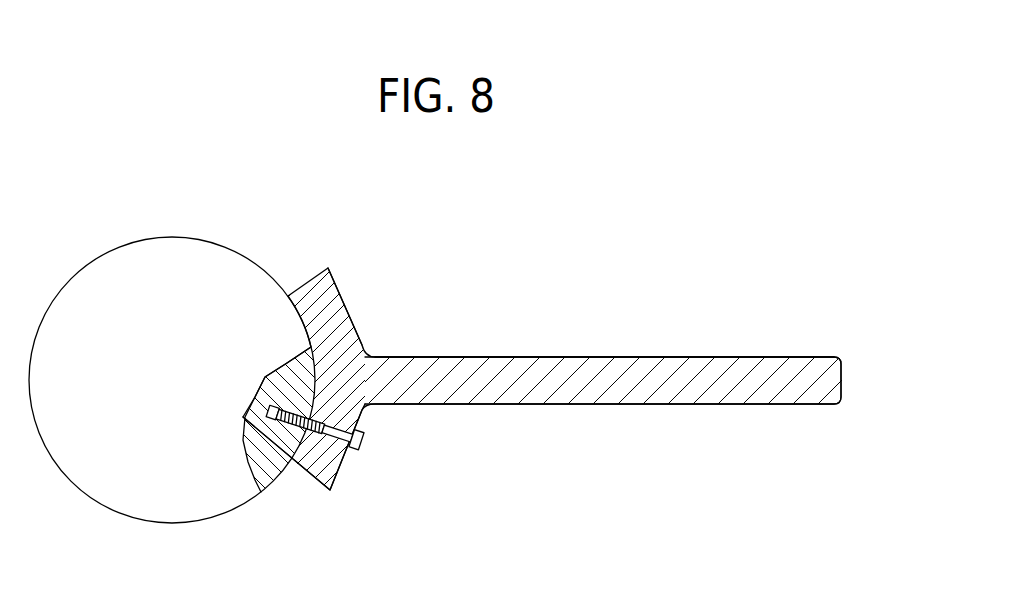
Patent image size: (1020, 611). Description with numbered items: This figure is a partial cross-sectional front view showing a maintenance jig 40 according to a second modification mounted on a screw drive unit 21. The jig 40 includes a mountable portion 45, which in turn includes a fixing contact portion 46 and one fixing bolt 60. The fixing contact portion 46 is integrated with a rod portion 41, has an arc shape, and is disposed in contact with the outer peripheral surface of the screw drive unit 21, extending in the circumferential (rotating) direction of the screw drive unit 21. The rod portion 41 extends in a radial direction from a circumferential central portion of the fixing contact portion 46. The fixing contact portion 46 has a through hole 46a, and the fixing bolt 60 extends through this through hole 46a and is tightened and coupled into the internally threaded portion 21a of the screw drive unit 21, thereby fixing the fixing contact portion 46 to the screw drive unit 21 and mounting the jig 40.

The screw drive unit 21 is at (170, 237).
The internally threaded portion 21a is at (258, 478).
The jig 40 is at (575, 357).
The rod portion 41 is at (508, 357).
The mountable portion 45 is at (350, 312).
The fixing contact portion 46 is at (341, 292).
The through hole 46a is at (330, 466).
The fixing bolt 60 is at (365, 442).